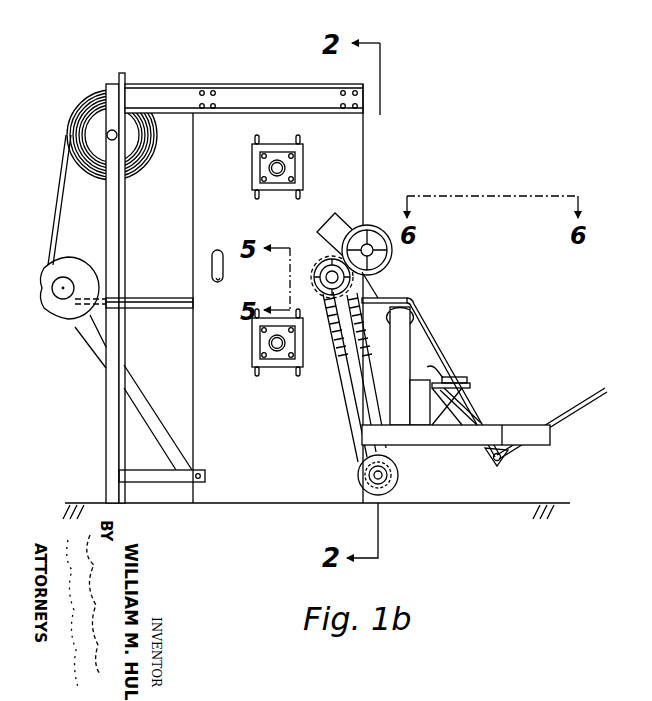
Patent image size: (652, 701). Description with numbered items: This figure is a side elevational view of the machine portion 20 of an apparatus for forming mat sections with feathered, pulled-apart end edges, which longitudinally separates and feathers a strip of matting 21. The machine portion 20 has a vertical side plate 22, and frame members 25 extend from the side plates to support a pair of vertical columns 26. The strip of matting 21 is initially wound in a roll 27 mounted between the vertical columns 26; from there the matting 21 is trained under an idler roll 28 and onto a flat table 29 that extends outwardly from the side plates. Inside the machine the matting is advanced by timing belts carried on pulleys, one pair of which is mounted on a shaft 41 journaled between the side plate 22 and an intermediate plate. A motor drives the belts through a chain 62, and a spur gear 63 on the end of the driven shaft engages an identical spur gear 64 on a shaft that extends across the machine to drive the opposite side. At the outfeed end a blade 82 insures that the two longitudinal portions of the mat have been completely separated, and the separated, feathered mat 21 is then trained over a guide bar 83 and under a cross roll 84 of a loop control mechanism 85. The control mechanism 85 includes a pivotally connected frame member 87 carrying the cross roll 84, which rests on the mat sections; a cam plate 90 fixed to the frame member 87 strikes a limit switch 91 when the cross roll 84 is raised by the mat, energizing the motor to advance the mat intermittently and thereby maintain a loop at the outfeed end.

The machine portion 20 is at (374, 184).
The strip of matting 21 is at (60, 186).
The side plate 22 is at (356, 145).
The frame members 25 is at (156, 84).
The vertical columns 26 is at (125, 240).
The roll 27 is at (142, 168).
The idler roll 28 is at (64, 278).
The flat table 29 is at (182, 313).
The shaft 41 is at (217, 283).
The chain 62 is at (337, 382).
The spur gear 63 is at (315, 266).
The spur gear 64 is at (392, 262).
The blade 82 is at (374, 298).
The guide bar 83 is at (409, 299).
The cross roll 84 is at (500, 461).
The loop control mechanism 85 is at (437, 452).
The frame member 87 is at (457, 418).
The cam plate 90 is at (462, 401).
The limit switch 91 is at (467, 378).